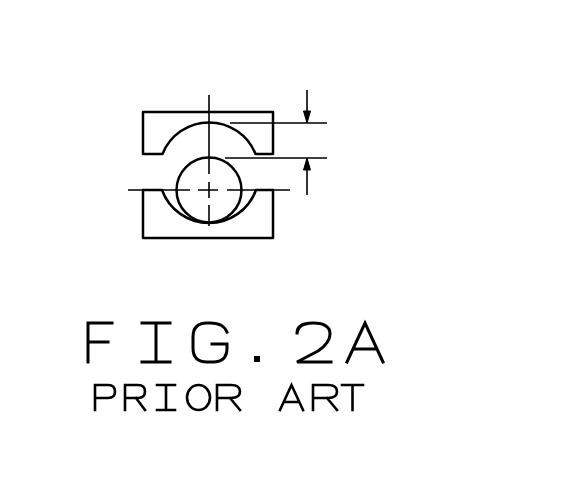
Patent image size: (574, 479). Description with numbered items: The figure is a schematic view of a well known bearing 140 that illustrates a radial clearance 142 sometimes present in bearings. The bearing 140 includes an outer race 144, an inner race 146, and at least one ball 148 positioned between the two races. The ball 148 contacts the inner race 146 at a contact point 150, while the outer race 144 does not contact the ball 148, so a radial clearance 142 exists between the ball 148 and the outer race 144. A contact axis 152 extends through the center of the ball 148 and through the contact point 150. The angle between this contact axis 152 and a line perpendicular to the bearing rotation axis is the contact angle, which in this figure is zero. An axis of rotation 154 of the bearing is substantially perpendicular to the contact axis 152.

The bearing 140 is at (150, 103).
The radial clearance 142 is at (278, 131).
The outer race 144 is at (165, 126).
The inner race 146 is at (158, 222).
The ball 148 is at (192, 178).
The contact point 150 is at (209, 224).
The contact axis 152 is at (209, 97).
The axis of rotation 154 is at (283, 192).